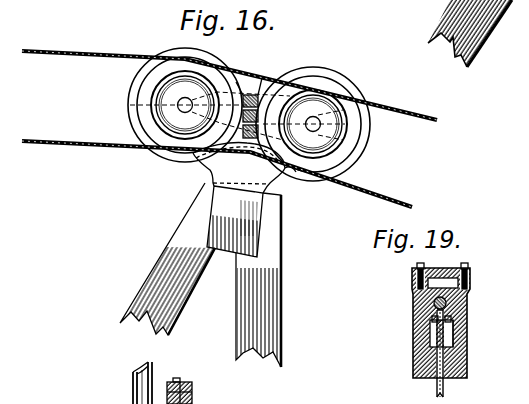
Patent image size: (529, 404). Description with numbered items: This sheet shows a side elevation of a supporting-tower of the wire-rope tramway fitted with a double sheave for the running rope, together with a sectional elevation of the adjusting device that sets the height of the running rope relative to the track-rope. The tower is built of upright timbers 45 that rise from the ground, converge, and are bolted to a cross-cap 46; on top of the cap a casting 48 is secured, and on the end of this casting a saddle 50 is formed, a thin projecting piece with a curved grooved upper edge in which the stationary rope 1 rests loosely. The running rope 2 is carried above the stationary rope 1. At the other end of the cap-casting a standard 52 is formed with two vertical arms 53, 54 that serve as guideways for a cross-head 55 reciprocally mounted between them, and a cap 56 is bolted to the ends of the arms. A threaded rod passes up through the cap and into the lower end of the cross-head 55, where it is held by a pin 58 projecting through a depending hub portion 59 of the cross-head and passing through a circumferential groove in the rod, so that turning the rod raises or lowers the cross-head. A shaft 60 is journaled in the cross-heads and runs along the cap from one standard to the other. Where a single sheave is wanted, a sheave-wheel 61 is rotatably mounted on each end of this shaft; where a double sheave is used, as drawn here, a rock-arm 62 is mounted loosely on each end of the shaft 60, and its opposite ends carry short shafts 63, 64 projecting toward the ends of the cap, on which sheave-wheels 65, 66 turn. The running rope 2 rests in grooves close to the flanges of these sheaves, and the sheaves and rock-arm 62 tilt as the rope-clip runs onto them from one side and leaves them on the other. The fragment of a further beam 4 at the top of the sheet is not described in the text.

In FIG. 16, the stationary rope 1 is at (83, 146).
In FIG. 16, the running rope 2 is at (82, 57).
In FIG. 16, the beam 4 is at (476, 33).
In FIG. 16, the upright timbers 45 is at (237, 318).
In FIG. 16, the cross-cap 46 is at (232, 208).
In FIG. 16, the casting 48 is at (287, 191).
In FIG. 16, the saddle 50 is at (230, 165).
In FIG. 19, the standard 52 is at (468, 362).
In FIG. 19, the vertical arm 53 is at (413, 340).
In FIG. 19, the vertical arm 54 is at (468, 338).
In FIG. 16, the cross-head 55 is at (223, 397).
In FIG. 19, the cross-head 55 is at (449, 306).
In FIG. 16, the cap 56 is at (184, 386).
In FIG. 19, the cap 56 is at (412, 270).
In FIG. 19, the pin 58 is at (430, 321).
In FIG. 19, the depending hub portion 59 is at (455, 322).
In FIG. 19, the shaft 60 is at (404, 357).
In FIG. 16, the sheave-wheel 61 is at (133, 387).
In FIG. 16, the rock-arm 62 is at (258, 94).
In FIG. 16, the short shaft 63 is at (180, 105).
In FIG. 16, the short shaft 64 is at (325, 125).
In FIG. 16, the sheave-wheel 65 is at (136, 120).
In FIG. 16, the sheave-wheel 66 is at (348, 162).